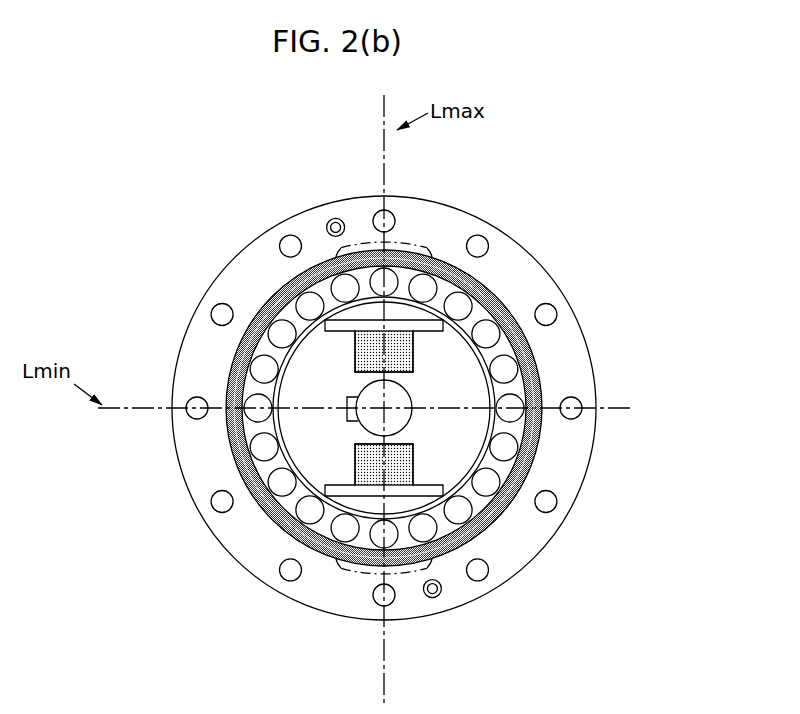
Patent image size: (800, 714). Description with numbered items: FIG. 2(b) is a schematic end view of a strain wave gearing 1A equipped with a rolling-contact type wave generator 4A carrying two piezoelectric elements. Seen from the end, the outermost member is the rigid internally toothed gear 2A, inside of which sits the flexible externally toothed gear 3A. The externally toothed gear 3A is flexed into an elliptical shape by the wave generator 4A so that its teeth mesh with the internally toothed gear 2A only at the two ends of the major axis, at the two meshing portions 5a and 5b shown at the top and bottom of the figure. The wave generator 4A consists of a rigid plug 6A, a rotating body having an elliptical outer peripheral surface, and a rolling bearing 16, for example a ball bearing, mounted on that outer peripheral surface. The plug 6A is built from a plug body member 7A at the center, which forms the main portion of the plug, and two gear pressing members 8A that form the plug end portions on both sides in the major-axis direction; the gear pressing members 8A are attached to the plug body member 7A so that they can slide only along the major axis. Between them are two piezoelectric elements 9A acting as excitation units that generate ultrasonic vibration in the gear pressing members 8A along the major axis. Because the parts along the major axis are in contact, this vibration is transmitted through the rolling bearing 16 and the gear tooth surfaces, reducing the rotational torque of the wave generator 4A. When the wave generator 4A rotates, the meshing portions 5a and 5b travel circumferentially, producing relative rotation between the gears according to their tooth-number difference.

The strain wave gearing 1A is at (514, 187).
The rigid internally toothed gear 2A is at (269, 226).
The flexible externally toothed gear 3A is at (277, 291).
The rolling-contact type wave generator 4A is at (249, 348).
The meshing portion 5a is at (407, 245).
The meshing portion 5b is at (360, 578).
The rigid plug 6A is at (664, 510).
The plug body member 7A is at (458, 421).
The gear pressing members 8A is at (413, 316).
The piezoelectric elements 9A is at (404, 352).
The rolling bearing 16 is at (504, 506).